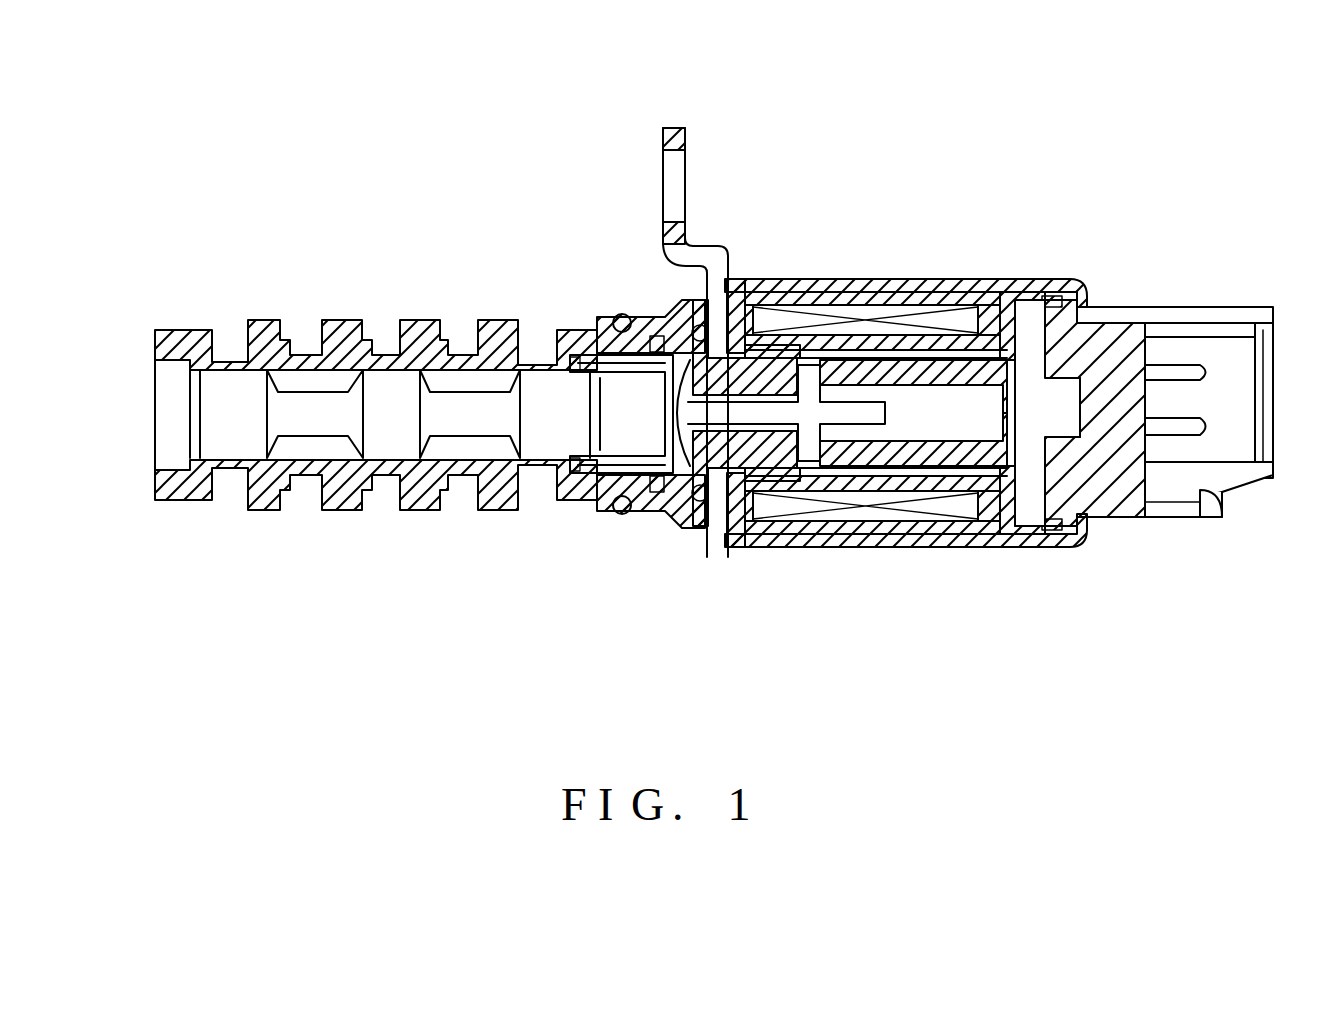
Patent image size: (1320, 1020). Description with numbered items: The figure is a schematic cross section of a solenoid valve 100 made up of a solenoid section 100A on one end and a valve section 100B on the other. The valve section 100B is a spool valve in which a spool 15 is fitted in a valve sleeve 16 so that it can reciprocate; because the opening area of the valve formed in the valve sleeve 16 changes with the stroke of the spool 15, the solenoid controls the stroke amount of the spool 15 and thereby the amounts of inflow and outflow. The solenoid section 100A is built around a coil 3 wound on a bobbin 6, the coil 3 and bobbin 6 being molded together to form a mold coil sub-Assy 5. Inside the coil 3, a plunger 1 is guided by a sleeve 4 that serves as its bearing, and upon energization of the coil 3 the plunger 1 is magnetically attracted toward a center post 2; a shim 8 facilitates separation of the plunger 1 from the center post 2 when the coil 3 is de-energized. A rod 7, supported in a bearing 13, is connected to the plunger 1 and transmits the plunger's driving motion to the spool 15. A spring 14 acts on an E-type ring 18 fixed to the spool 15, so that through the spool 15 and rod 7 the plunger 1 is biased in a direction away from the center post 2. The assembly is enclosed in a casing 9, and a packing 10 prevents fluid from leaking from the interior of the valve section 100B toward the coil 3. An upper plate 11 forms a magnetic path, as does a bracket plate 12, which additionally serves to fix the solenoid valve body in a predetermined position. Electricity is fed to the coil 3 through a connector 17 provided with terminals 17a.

The solenoid valve 100 is at (335, 183).
The solenoid section 100A is at (905, 185).
The valve section 100B is at (507, 260).
The plunger 1 is at (900, 505).
The center post 2 is at (773, 300).
The coil 3 is at (905, 308).
The sleeve 4 is at (860, 522).
The mold coil sub-Assy 5 is at (872, 292).
The bobbin 6 is at (957, 293).
The rod 7 is at (716, 545).
The shim 8 is at (762, 540).
The casing 9 is at (943, 548).
The packing 10 is at (738, 290).
The upper plate 11 is at (1025, 522).
The bracket plate 12 is at (712, 255).
The bearing 13 is at (657, 512).
The spring 14 is at (587, 478).
The spool 15 is at (238, 375).
The valve sleeve 16 is at (352, 320).
The connector 17 is at (1182, 455).
The terminals 17a is at (1178, 363).
The E-type ring 18 is at (655, 338).